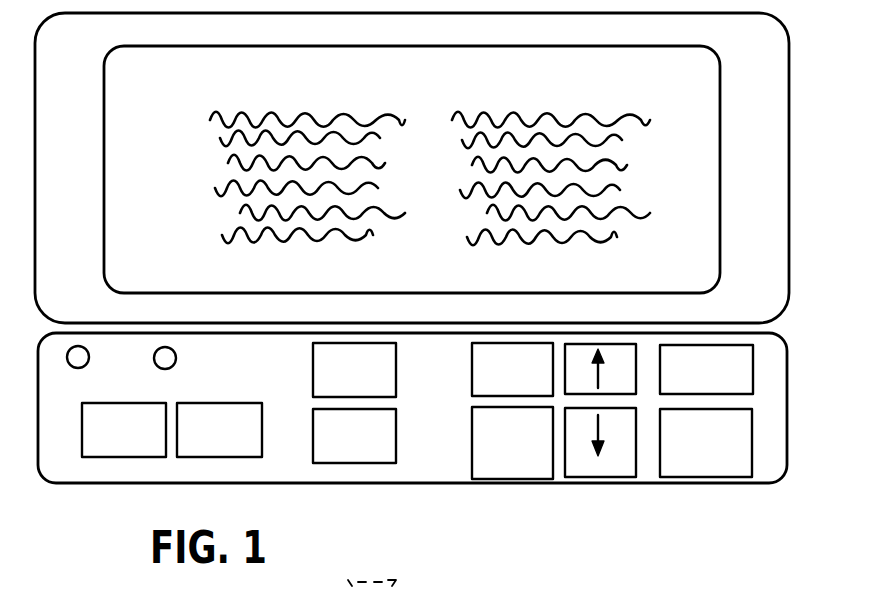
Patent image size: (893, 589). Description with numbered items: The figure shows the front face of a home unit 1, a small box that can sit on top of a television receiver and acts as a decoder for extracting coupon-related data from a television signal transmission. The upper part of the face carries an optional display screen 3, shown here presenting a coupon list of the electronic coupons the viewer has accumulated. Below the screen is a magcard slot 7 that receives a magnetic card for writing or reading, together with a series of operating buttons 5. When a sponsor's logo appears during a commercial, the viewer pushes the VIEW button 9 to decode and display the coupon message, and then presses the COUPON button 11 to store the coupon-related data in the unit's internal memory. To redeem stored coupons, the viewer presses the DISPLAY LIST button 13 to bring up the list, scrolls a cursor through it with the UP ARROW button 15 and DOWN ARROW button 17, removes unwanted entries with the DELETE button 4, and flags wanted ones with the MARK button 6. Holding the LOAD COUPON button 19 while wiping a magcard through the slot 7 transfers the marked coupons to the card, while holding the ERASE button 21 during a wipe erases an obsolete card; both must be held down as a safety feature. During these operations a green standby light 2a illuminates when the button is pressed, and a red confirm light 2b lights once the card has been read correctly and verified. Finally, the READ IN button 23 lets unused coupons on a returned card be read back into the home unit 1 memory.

The home unit 1 is at (800, 164).
The standby light 2a is at (89, 358).
The confirm light 2b is at (176, 358).
The display screen 3 is at (720, 210).
The DELETE button 4 is at (472, 375).
The operating buttons 5 is at (758, 425).
The MARK button 6 is at (753, 360).
The magcard slot 7 is at (712, 331).
The VIEW button 9 is at (105, 457).
The COUPON button 11 is at (200, 457).
The DISPLAY LIST button 13 is at (490, 465).
The UP ARROW button 15 is at (565, 392).
The DOWN ARROW button 17 is at (636, 445).
The LOAD COUPON button 19 is at (705, 480).
The ERASE button 21 is at (313, 387).
The READ IN button 23 is at (312, 435).